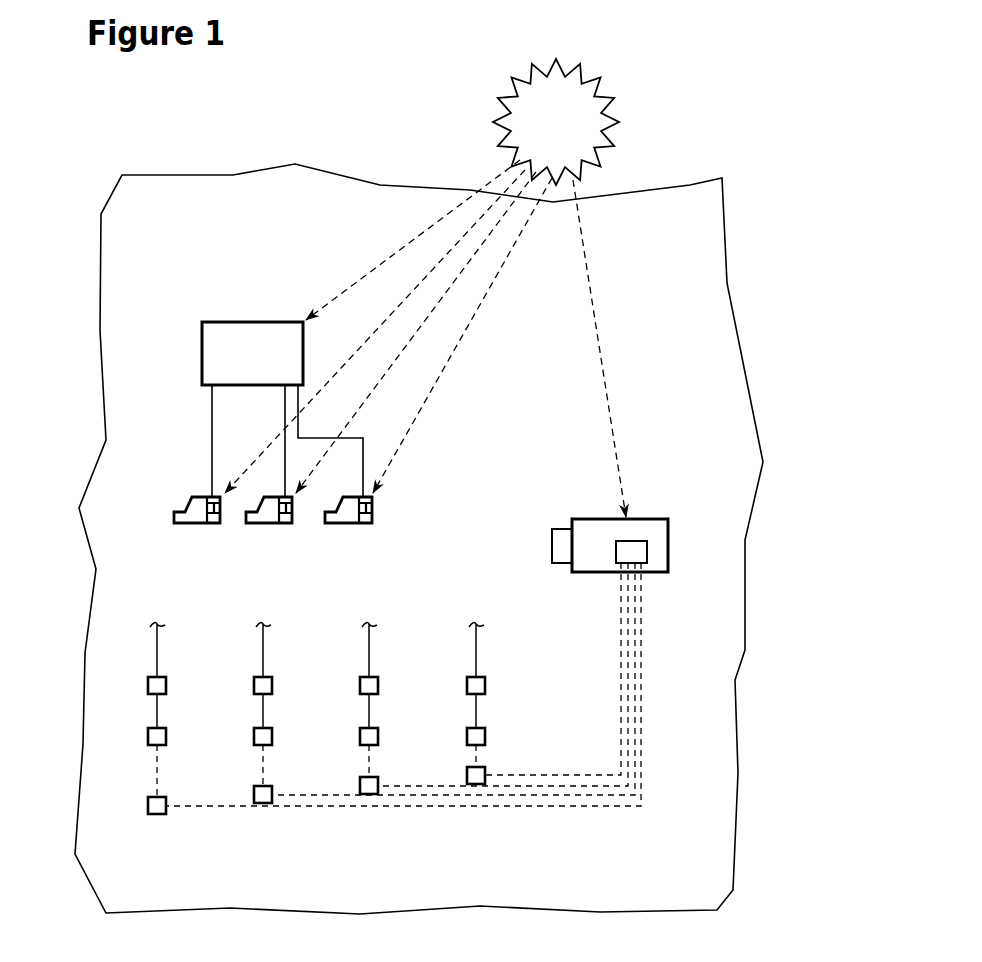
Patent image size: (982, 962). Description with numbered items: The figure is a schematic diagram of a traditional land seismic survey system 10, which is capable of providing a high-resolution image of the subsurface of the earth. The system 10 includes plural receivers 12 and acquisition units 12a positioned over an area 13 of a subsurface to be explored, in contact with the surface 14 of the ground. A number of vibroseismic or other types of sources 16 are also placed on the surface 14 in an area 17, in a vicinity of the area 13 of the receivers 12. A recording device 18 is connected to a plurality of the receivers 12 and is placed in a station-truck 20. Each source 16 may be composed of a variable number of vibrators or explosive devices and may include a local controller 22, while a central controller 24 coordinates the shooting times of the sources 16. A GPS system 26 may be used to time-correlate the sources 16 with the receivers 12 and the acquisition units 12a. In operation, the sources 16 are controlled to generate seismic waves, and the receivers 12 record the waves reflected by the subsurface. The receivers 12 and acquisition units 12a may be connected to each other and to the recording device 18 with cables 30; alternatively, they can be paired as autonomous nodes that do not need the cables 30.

The land seismic survey system 10 is at (341, 108).
The receivers 12 is at (148, 684).
The acquisition units 12a is at (157, 814).
The area 13 is at (698, 812).
The surface 14 is at (75, 533).
The sources 16 is at (196, 516).
The area 17 is at (720, 385).
The recording device 18 is at (642, 553).
The station-truck 20 is at (657, 513).
The local controller 22 is at (214, 525).
The central controller 24 is at (205, 322).
The GPS system 26 is at (592, 80).
The cables 30 is at (618, 634).